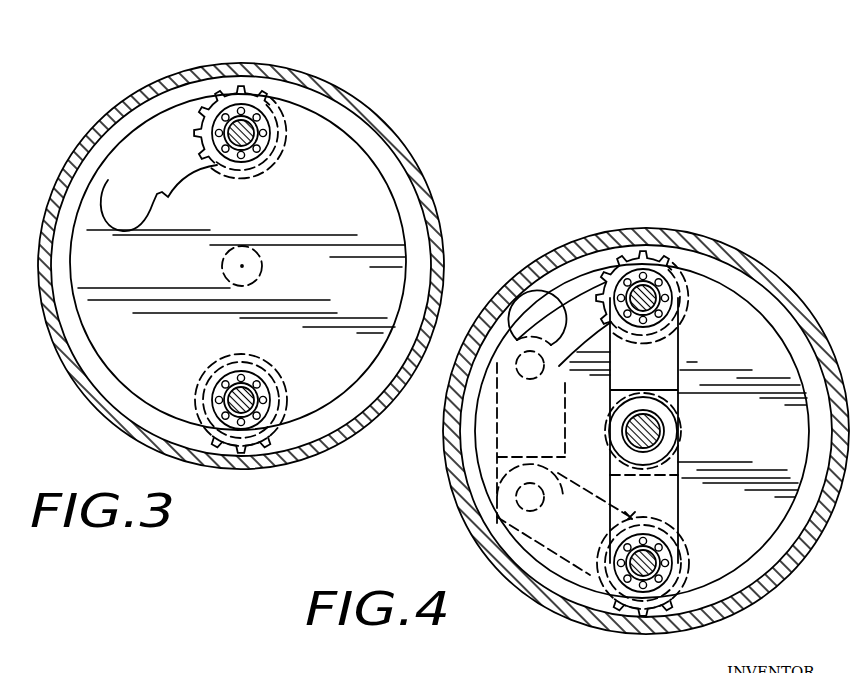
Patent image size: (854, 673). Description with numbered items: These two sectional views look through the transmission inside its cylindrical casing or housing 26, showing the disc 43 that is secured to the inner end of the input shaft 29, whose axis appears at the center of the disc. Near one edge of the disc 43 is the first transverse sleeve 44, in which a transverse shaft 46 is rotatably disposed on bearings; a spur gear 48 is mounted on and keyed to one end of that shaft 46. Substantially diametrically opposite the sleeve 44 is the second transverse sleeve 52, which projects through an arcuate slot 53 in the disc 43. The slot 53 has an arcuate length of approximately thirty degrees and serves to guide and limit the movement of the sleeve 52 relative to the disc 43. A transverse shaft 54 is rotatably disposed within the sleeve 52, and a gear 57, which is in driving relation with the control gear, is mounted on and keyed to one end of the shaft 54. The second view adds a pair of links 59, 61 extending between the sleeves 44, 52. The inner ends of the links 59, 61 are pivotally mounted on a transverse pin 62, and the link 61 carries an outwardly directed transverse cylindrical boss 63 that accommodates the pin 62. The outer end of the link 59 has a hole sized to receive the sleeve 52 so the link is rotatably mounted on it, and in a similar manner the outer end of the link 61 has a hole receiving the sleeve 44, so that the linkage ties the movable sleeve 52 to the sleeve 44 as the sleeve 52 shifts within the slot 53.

In FIG. 3, the cylindrical casing or housing 26 is at (176, 80).
In FIG. 4, the cylindrical casing or housing 26 is at (647, 232).
In FIG. 3, the disc 43 is at (328, 147).
In FIG. 4, the disc 43 is at (642, 431).
In FIG. 3, the input shaft 29 is at (264, 267).
In FIG. 3, the gear 57 is at (241, 86).
In FIG. 4, the gear 57 is at (625, 262).
In FIG. 3, the second transverse sleeve 52 is at (260, 114).
In FIG. 4, the second transverse sleeve 52 is at (652, 272).
In FIG. 3, the transverse shaft 54 is at (252, 141).
In FIG. 4, the transverse shaft 54 is at (663, 288).
In FIG. 3, the arcuate slot 53 is at (165, 198).
In FIG. 4, the arcuate slot 53 is at (573, 302).
In FIG. 3, the transverse shaft 46 is at (247, 387).
In FIG. 4, the transverse shaft 46 is at (660, 573).
In FIG. 3, the first transverse sleeve 44 is at (234, 428).
In FIG. 4, the first transverse sleeve 44 is at (627, 585).
In FIG. 3, the spur gear 48 is at (242, 444).
In FIG. 4, the spur gear 48 is at (645, 612).
In FIG. 4, the link 59 is at (665, 358).
In FIG. 4, the link 61 is at (585, 488).
In FIG. 4, the transverse pin 62 is at (663, 433).
In FIG. 4, the transverse cylindrical boss 63 is at (657, 427).